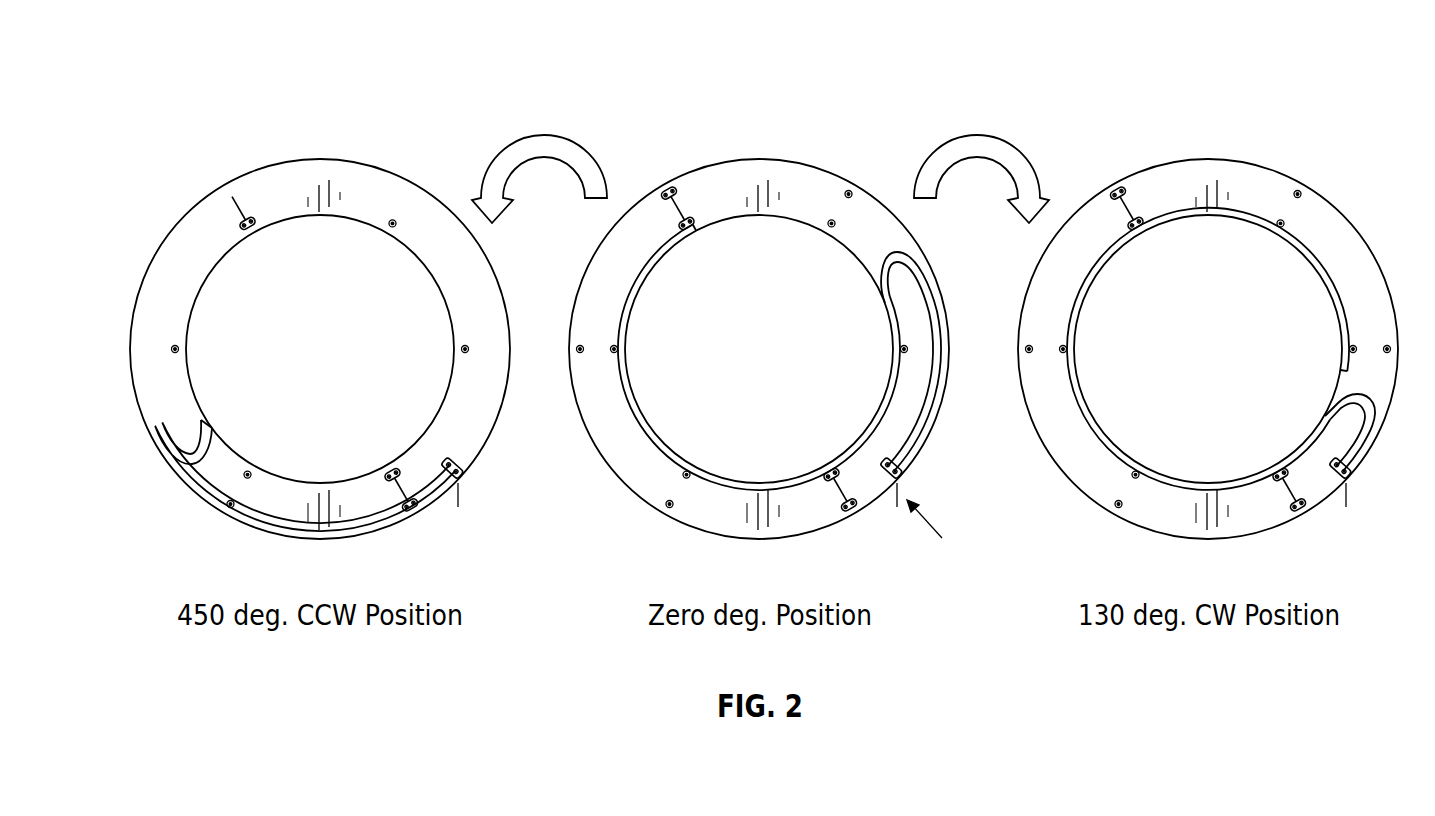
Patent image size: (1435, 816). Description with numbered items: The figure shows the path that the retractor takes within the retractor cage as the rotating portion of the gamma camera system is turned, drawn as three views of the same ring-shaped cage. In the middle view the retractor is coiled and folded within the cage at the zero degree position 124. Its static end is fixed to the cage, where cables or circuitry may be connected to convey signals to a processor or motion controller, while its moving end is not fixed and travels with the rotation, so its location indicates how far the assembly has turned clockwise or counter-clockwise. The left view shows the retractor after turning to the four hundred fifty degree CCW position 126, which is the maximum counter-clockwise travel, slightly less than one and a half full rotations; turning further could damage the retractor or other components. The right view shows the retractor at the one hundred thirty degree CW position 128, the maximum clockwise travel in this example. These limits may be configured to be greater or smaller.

The zero degree position 124 is at (725, 113).
The 450 degree CCW position 126 is at (235, 113).
The 130 degree CW position 128 is at (1187, 113).